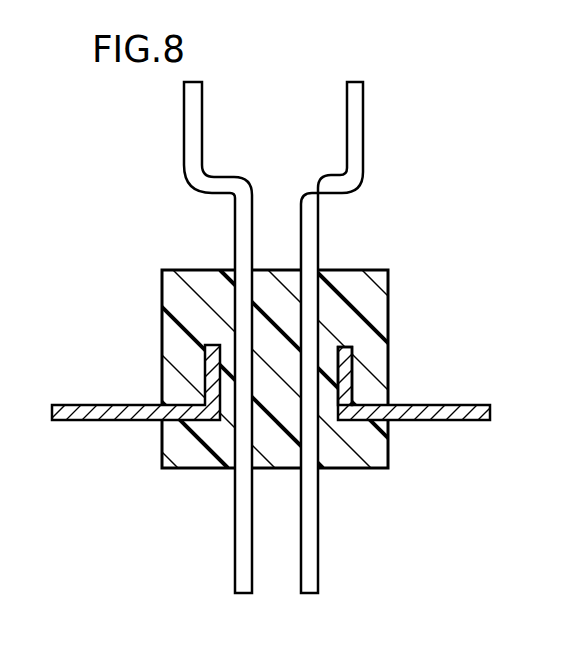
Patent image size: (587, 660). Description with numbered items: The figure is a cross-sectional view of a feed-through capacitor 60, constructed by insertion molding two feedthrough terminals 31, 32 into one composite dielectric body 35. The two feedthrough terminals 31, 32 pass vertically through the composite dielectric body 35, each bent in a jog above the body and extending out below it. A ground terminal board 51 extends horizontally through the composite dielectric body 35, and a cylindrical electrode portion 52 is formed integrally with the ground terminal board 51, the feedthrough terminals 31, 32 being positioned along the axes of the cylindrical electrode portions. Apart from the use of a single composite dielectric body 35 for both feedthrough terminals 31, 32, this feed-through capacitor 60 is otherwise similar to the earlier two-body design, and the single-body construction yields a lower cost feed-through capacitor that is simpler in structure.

The feedthrough terminal 31 is at (193, 153).
The feedthrough terminal 32 is at (353, 128).
The composite dielectric body 35 is at (377, 452).
The ground terminal board 51 is at (453, 405).
The cylindrical electrode portion 52 is at (348, 377).
The feed-through capacitor 60 is at (131, 462).